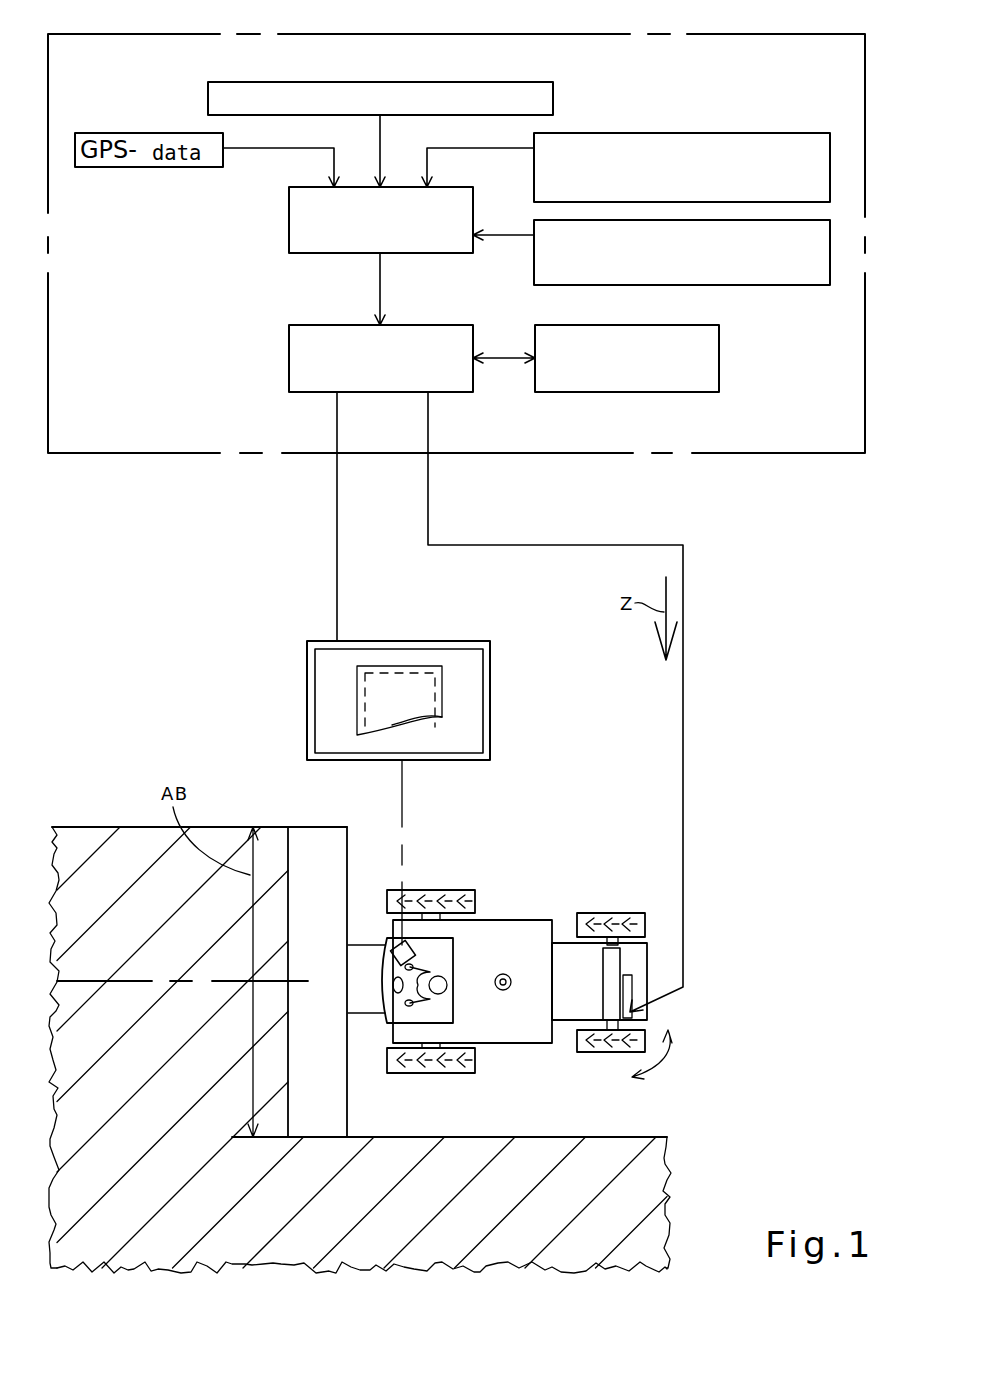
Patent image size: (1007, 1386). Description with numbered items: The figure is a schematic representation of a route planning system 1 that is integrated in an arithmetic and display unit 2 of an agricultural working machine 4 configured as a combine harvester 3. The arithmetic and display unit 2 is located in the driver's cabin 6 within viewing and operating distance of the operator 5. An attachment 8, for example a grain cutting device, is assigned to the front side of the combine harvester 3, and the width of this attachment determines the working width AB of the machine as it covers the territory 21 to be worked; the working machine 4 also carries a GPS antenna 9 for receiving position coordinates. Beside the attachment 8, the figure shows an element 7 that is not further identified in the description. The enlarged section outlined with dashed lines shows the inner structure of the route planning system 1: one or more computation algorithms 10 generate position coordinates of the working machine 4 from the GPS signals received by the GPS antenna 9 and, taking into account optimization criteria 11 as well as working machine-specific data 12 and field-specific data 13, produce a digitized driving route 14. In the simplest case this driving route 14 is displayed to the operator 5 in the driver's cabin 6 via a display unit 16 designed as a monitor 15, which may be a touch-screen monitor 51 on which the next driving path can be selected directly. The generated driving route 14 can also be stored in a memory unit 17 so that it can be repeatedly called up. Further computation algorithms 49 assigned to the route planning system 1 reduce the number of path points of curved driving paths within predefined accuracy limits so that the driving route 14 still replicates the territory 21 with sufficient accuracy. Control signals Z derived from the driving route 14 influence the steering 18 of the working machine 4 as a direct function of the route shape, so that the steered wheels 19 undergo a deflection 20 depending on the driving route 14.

The route planning system 1 is at (128, 443).
The arithmetic and display unit 2 is at (415, 945).
The combine harvester 3 is at (536, 958).
The agricultural working machine 4 is at (536, 958).
The operator 5 is at (455, 985).
The driver's cabin 6 is at (445, 1015).
The driving path 7 is at (285, 940).
The attachment 8 is at (303, 827).
The GPS antenna 9 is at (510, 977).
The computation algorithms 10 is at (329, 244).
The optimization criteria 11 is at (547, 92).
The working machine-specific data 12 is at (807, 135).
The field-specific data 13 is at (725, 277).
The digitized driving route 14 is at (293, 380).
The monitor 15 is at (413, 727).
The display unit 16 is at (457, 742).
The memory unit 17 is at (708, 385).
The steering 18 is at (665, 1020).
The steered wheels 19 is at (592, 1050).
The deflection 20 is at (647, 1067).
The territory 21 is at (150, 934).
The further computation algorithms 49 is at (300, 247).
The touch-screen monitor 51 is at (365, 692).